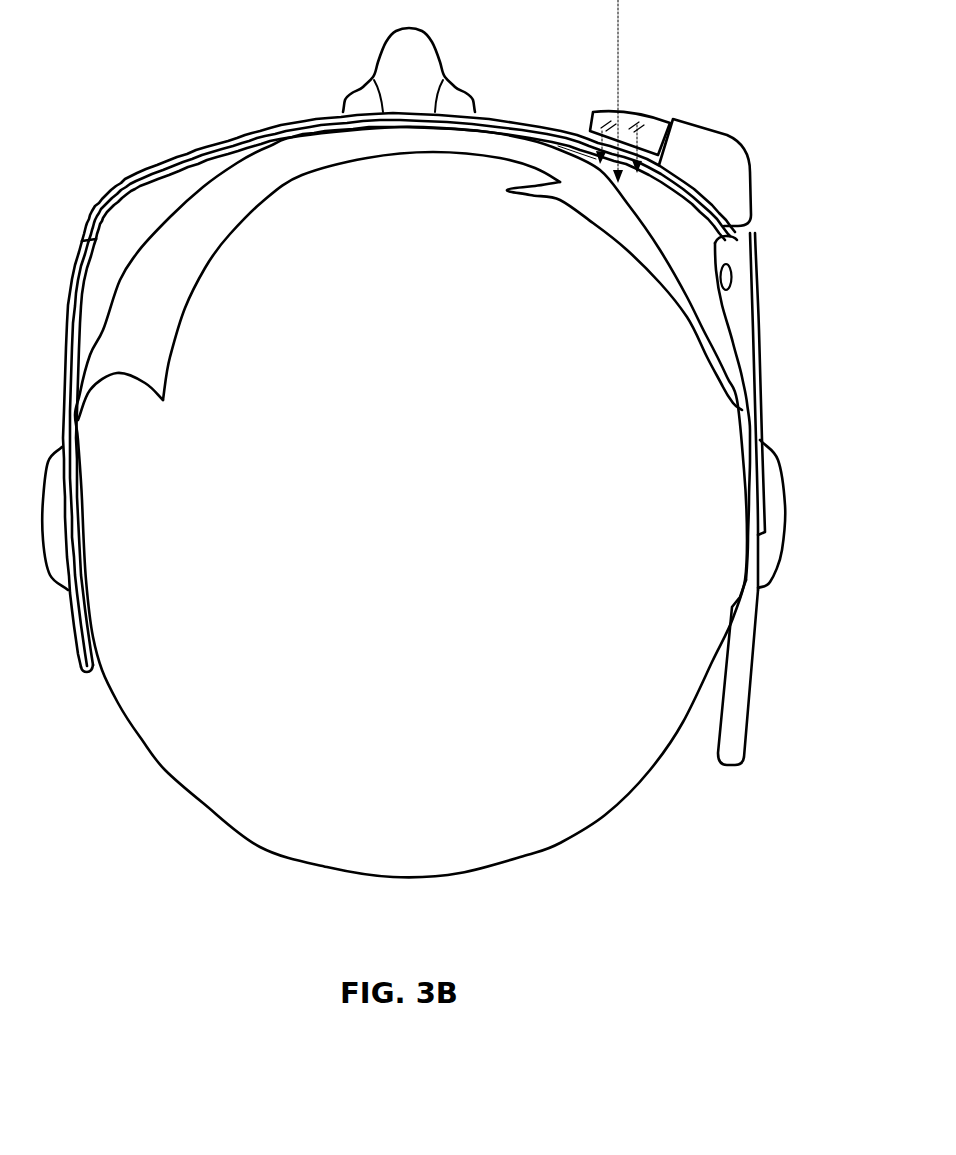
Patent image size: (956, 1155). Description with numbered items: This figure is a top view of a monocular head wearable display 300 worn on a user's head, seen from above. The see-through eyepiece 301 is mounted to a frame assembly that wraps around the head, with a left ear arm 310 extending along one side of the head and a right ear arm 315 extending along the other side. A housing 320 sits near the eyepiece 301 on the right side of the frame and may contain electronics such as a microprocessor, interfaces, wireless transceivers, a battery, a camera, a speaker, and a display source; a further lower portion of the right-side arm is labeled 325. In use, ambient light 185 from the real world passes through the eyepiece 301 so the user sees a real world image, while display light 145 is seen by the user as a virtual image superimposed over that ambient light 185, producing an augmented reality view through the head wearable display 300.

The head wearable display 300 is at (151, 95).
The left ear arm 310 is at (73, 328).
The display light 145 is at (590, 131).
The ambient light 185 is at (619, 48).
The eyepiece 301 is at (648, 115).
The housing 320 is at (730, 181).
The right ear arm 315 is at (750, 383).
The temple tip 325 is at (742, 678).